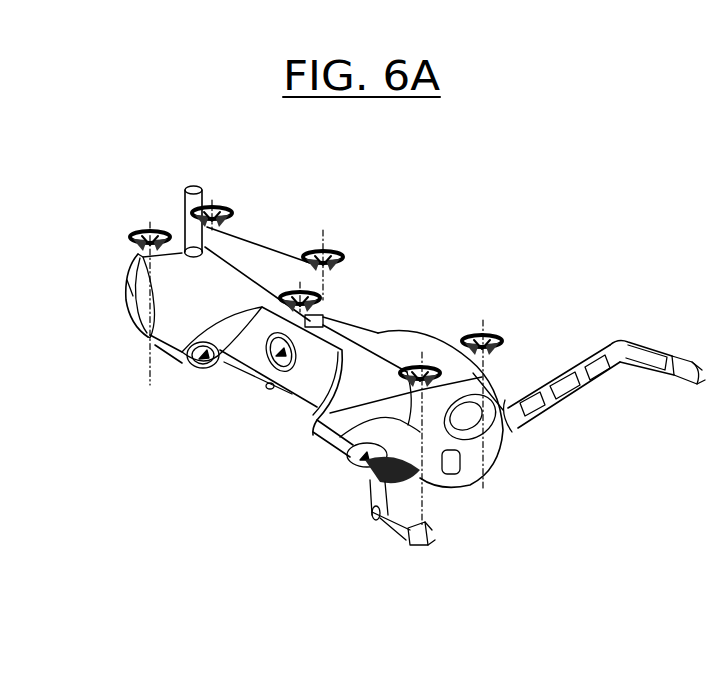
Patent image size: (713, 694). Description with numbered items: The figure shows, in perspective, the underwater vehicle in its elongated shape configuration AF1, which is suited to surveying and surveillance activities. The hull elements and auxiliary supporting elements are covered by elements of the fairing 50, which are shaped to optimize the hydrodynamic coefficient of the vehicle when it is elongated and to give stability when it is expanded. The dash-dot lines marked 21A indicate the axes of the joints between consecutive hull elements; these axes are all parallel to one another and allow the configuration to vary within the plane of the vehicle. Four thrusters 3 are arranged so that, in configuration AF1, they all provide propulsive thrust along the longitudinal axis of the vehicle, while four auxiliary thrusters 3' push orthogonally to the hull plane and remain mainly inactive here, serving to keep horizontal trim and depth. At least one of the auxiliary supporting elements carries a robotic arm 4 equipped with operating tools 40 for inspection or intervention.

The elongated shape configuration AF1 is at (470, 210).
The fairing 50 is at (250, 257).
The axes of the joints 21A is at (208, 192).
The thruster 3 is at (266, 437).
The auxiliary thruster 3' is at (314, 355).
The robotic arm 4 is at (370, 510).
The operating tools 40 is at (413, 553).